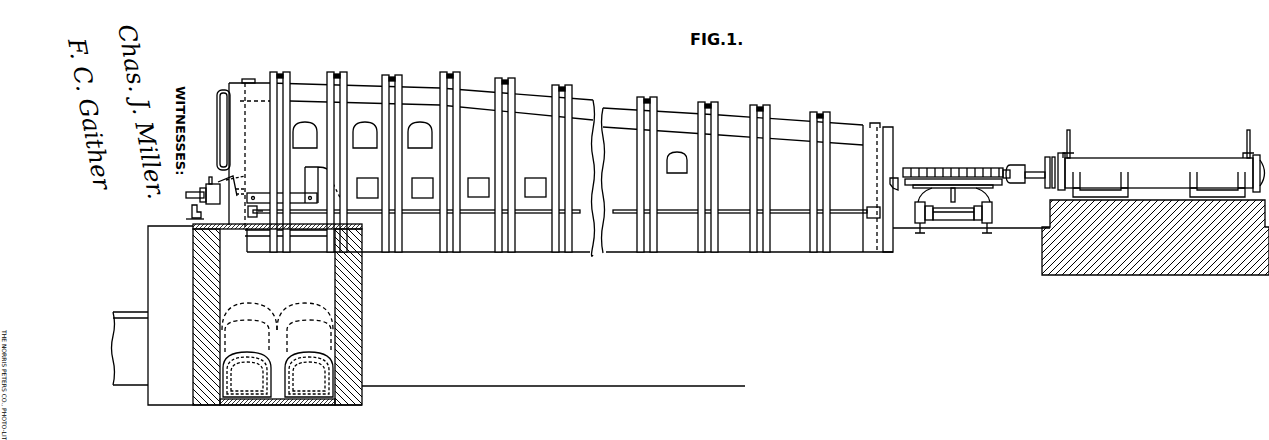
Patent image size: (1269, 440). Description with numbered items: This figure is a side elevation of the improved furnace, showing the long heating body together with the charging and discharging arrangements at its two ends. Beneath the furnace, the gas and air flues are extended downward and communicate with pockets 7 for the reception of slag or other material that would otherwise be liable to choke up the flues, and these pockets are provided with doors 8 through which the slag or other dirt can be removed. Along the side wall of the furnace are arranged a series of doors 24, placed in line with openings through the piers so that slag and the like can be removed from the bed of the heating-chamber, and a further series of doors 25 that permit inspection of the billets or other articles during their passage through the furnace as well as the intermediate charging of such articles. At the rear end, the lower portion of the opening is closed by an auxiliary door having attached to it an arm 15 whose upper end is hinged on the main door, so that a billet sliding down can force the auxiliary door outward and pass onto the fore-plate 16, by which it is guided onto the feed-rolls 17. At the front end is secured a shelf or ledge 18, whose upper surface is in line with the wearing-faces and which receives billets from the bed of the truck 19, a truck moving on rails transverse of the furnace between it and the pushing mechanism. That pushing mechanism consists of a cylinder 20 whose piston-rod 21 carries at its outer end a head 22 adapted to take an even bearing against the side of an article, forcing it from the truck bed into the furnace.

The pockets 7 is at (237, 314).
The doors 8 is at (278, 374).
The arm 15 is at (217, 131).
The fore-plate 16 is at (226, 179).
The feed-rolls 17 is at (207, 200).
The shelf or ledge 18 is at (895, 180).
The truck 19 is at (953, 210).
The cylinder 20 is at (1164, 163).
The piston-rod 21 is at (1034, 177).
The head 22 is at (1005, 168).
The doors 24 is at (451, 188).
The doors 25 is at (490, 147).